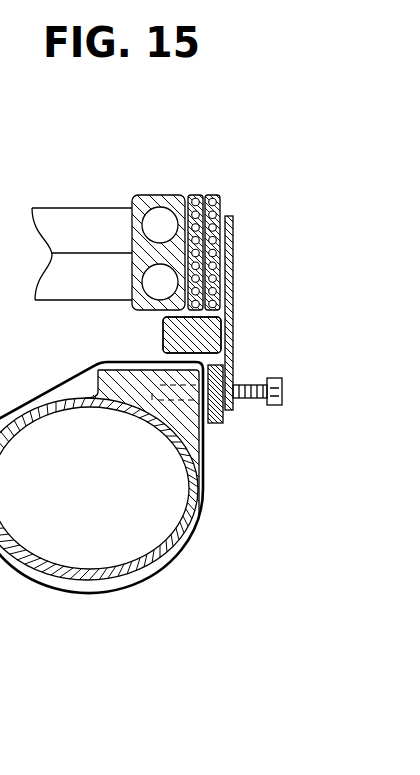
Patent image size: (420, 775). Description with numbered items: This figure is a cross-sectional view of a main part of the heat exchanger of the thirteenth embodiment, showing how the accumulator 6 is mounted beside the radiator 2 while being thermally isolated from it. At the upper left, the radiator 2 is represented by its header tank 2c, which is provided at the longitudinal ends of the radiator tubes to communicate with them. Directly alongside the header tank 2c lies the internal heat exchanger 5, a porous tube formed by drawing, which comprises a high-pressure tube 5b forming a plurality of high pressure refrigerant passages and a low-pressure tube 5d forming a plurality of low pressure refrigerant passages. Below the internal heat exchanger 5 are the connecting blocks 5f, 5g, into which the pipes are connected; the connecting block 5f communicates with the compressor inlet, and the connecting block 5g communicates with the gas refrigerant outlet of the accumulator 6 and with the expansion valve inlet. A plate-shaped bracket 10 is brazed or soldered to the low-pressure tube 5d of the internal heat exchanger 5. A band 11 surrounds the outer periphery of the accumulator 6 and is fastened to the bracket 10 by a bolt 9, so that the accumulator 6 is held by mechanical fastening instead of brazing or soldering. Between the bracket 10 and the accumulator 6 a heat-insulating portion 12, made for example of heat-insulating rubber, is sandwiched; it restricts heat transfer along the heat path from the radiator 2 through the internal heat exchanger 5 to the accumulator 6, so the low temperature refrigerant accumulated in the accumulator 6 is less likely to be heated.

The radiator 2 is at (72, 194).
The header tank 2c is at (156, 194).
The internal heat exchanger 5 is at (213, 190).
The high-pressure tube 5b is at (190, 194).
The low-pressure tube 5d is at (228, 197).
The connecting block 5f is at (163, 336).
The connecting block 5g is at (192, 335).
The bracket 10 is at (235, 263).
The bolt 9 is at (283, 392).
The heat-insulating portion 12 is at (217, 423).
The band 11 is at (191, 538).
The accumulator 6 is at (158, 566).